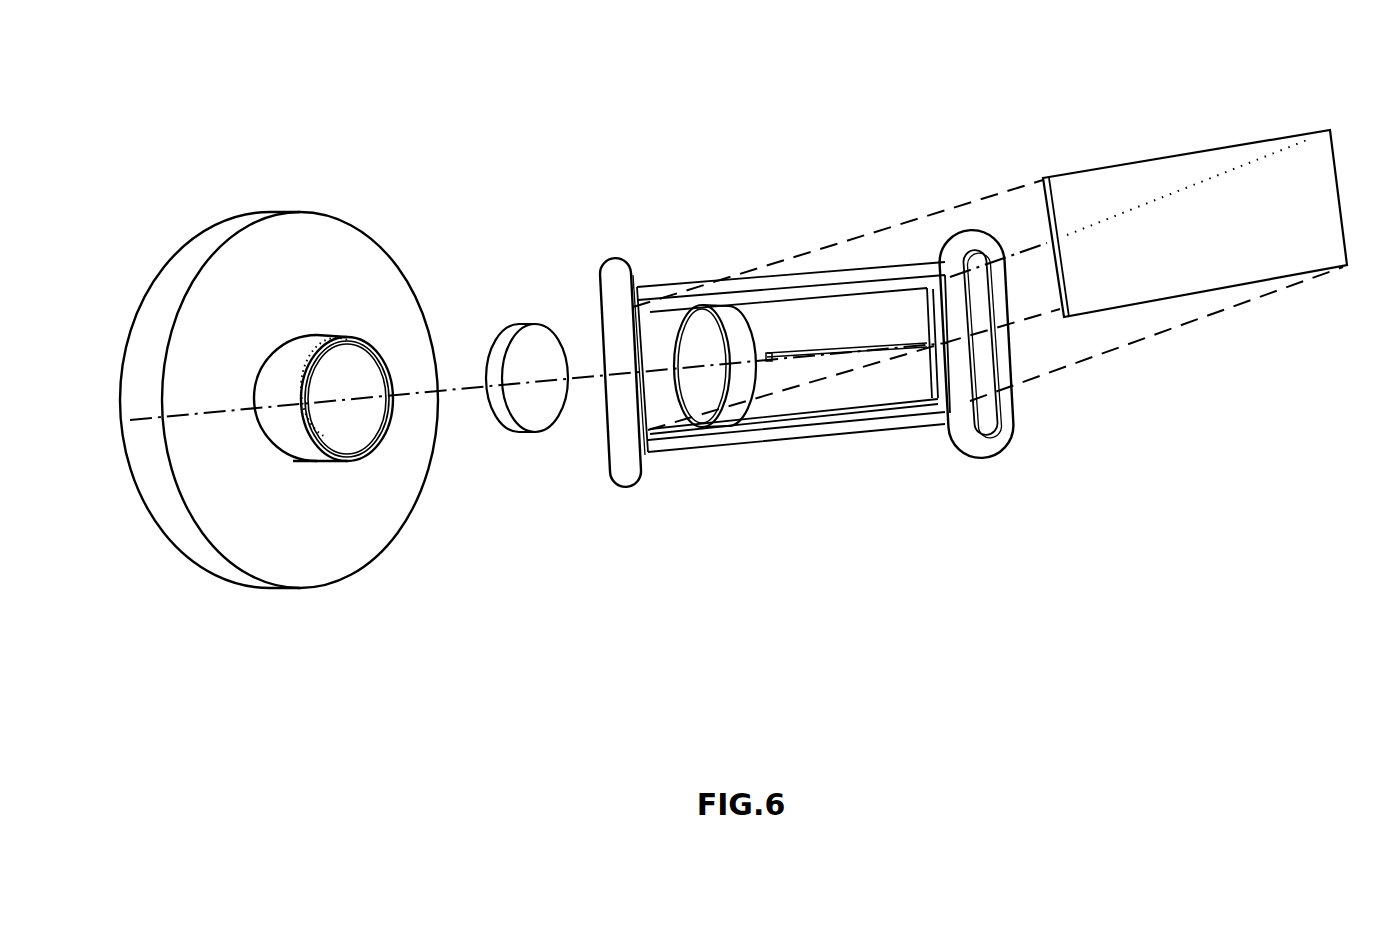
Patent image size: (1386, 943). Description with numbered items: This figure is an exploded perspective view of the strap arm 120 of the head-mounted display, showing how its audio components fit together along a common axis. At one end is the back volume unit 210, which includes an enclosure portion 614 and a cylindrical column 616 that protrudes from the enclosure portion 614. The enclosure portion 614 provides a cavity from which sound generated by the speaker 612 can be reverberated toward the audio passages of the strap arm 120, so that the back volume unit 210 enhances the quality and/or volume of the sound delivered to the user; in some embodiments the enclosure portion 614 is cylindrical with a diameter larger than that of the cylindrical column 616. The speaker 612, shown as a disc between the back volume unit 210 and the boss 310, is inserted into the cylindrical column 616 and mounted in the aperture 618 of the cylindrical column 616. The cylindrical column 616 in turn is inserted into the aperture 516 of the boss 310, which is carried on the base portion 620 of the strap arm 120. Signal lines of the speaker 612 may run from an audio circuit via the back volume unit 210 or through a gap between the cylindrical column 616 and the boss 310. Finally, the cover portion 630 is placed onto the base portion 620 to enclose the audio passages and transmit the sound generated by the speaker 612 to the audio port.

The strap arm 120 is at (571, 114).
The back volume unit 210 is at (265, 257).
The speaker 612 is at (528, 343).
The boss 310 is at (805, 333).
The base portion 620 is at (909, 297).
The cover portion 630 is at (1103, 190).
The aperture 516 is at (773, 377).
The aperture 618 is at (360, 398).
The cylindrical column 616 is at (315, 438).
The enclosure portion 614 is at (177, 452).